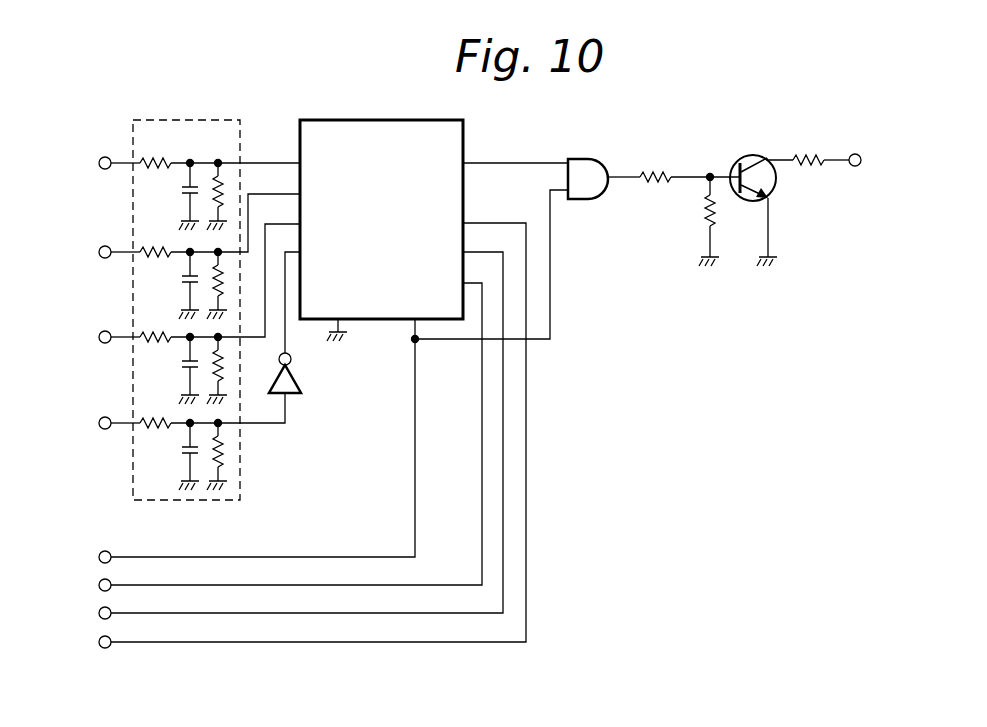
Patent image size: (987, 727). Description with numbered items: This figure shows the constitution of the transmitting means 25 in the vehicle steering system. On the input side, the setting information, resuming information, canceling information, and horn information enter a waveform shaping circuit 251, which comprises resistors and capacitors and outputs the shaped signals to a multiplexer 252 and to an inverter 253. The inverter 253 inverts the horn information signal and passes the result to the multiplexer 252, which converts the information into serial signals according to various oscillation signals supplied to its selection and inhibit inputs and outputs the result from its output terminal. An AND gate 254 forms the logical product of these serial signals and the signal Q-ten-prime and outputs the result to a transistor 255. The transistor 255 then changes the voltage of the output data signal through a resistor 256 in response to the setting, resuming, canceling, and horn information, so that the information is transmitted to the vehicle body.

The transmitting means 25 is at (210, 96).
The waveform shaping circuit 251 is at (240, 120).
The multiplexer 252 is at (465, 147).
The inverter 253 is at (300, 383).
The AND gate 254 is at (590, 199).
The transistor 255 is at (775, 192).
The resistor 256 is at (805, 152).